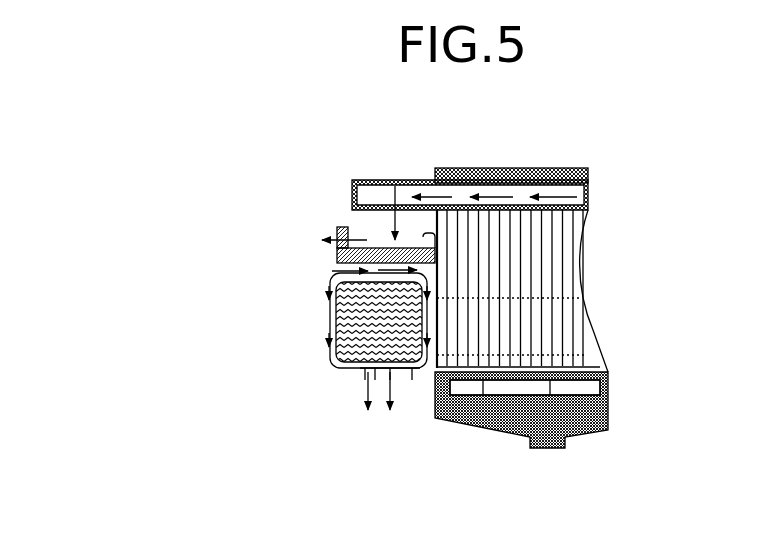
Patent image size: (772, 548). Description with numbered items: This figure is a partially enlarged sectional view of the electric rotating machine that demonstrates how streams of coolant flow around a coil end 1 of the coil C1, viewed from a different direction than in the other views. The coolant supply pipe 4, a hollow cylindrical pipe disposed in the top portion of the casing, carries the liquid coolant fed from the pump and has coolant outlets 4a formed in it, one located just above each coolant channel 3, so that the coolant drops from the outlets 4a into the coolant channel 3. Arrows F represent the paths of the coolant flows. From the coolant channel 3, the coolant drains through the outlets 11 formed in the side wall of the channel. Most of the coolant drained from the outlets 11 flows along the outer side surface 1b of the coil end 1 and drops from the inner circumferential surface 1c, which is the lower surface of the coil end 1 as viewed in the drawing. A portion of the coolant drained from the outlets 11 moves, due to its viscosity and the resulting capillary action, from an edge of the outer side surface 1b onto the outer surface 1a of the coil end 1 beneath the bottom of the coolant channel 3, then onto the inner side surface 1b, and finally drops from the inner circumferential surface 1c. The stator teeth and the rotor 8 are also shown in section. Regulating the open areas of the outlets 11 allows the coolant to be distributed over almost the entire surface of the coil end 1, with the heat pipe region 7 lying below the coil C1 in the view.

The coil end 1 is at (417, 378).
The outer surface of the coil end 1a is at (330, 266).
The side surface of the coil end 1b is at (325, 322).
The inner circumferential surface of the coil end 1c is at (355, 372).
The coolant channel 3 is at (336, 222).
The coolant supply pipe 4 is at (540, 168).
The coolant outlet 4a is at (388, 180).
The heat pipe 7 is at (607, 385).
The rotor 8 is at (610, 413).
The outlet 11 is at (335, 230).
The arrow representing coolant flow path F is at (430, 178).
The coil C1 is at (483, 380).